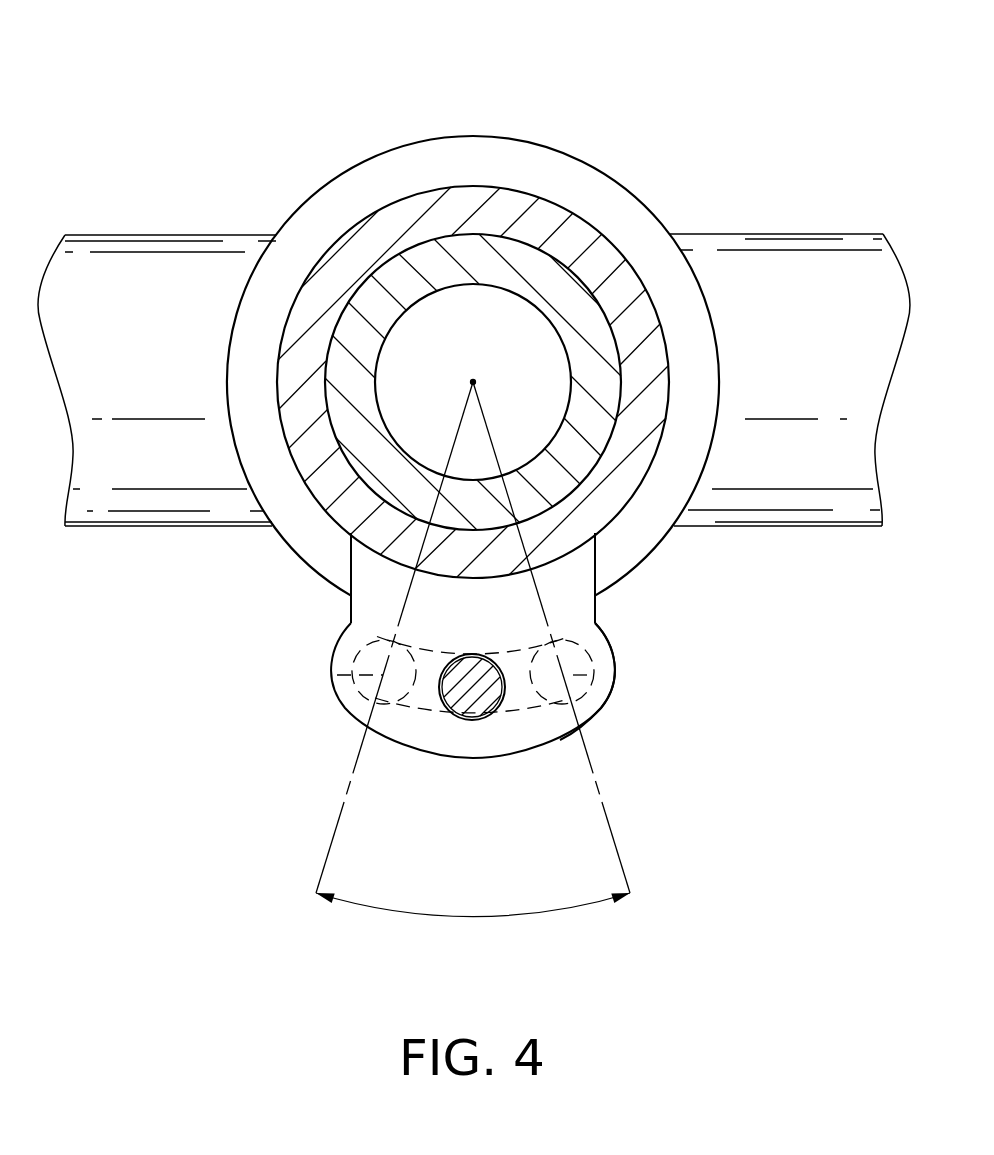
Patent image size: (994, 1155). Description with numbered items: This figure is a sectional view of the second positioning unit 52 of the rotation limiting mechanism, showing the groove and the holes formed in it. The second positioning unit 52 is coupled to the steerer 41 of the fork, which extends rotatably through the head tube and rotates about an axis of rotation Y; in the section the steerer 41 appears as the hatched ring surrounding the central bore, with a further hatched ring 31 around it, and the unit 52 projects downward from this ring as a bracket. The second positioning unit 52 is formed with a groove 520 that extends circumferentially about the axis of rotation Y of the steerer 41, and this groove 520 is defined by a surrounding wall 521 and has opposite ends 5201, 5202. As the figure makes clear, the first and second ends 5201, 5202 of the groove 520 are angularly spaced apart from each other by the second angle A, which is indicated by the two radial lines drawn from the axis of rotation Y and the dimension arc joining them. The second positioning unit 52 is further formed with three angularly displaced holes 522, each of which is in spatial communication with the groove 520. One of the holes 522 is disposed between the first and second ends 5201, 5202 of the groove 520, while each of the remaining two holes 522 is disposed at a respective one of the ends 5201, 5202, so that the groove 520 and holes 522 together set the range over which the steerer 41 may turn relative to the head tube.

The bearing ring 31 is at (513, 207).
The axis of rotation Y is at (444, 221).
The steerer 41 is at (393, 272).
The second positioning unit 52 is at (493, 690).
The surrounding wall 521 is at (613, 698).
The groove 520 is at (403, 735).
The holes 522 is at (352, 698).
The first end of the groove 5201 is at (327, 670).
The second end of the groove 5202 is at (622, 685).
The second angle A is at (470, 917).